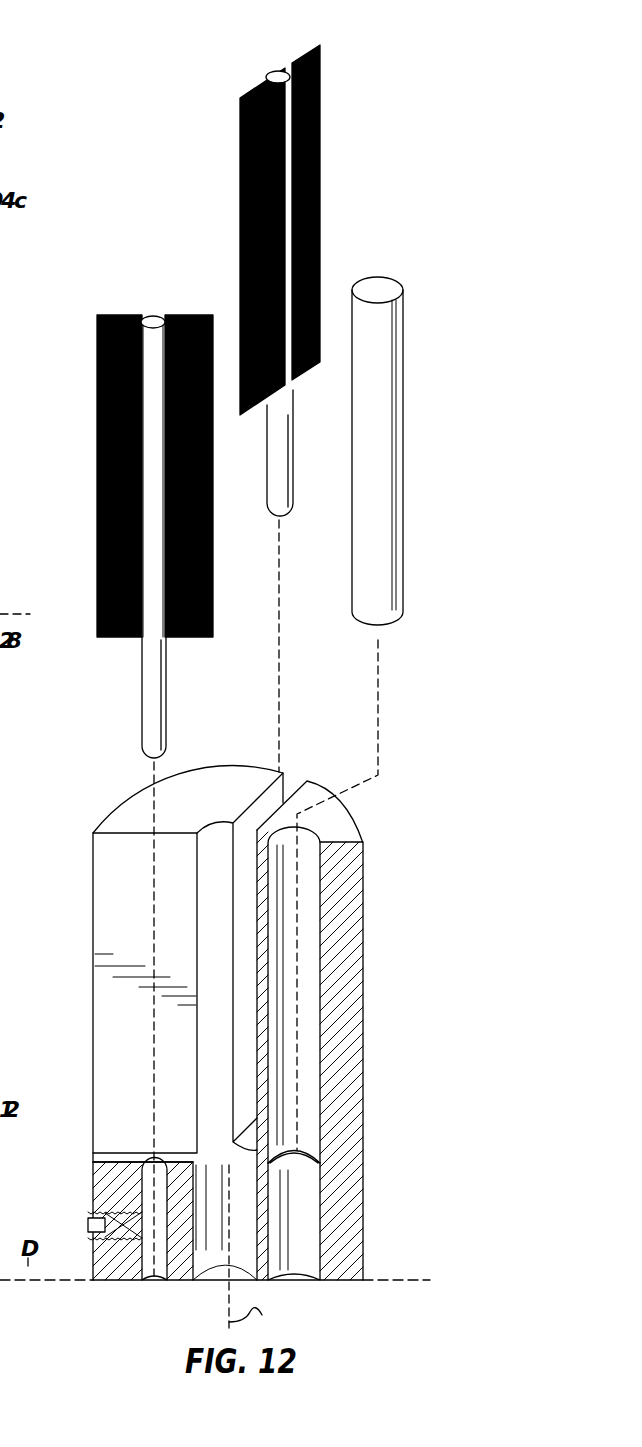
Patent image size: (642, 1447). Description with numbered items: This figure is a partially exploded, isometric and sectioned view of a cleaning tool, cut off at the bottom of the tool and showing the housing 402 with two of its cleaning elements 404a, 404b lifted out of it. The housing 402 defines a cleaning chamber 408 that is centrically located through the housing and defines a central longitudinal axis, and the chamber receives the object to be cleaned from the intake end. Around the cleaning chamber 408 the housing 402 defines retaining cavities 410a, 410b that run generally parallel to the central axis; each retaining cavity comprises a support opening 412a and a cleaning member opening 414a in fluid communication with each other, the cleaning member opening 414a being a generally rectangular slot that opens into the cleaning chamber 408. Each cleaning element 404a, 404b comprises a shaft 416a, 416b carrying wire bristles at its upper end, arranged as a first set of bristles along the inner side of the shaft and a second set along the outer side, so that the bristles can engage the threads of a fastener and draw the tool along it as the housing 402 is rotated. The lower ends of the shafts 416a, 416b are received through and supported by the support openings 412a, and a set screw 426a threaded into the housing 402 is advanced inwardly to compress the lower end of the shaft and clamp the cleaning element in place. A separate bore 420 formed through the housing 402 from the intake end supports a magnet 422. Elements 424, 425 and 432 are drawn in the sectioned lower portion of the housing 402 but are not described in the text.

The housing 402 is at (345, 823).
The cleaning element 404a is at (128, 740).
The cleaning element 404b is at (284, 386).
The cleaning chamber 408 is at (218, 852).
The retaining cavity 410a is at (128, 905).
The retaining cavity 410b is at (301, 772).
The support opening 412a is at (152, 1194).
The cleaning member opening 414a is at (113, 872).
The shaft 416a is at (152, 317).
The shaft 416b is at (277, 71).
The bore 420 is at (308, 1080).
The magnet 422 is at (392, 440).
The sleeve 424 is at (268, 1030).
The lower bore 425 is at (303, 1225).
The set screw 426a is at (90, 1222).
The bottom bore 432 is at (222, 1245).